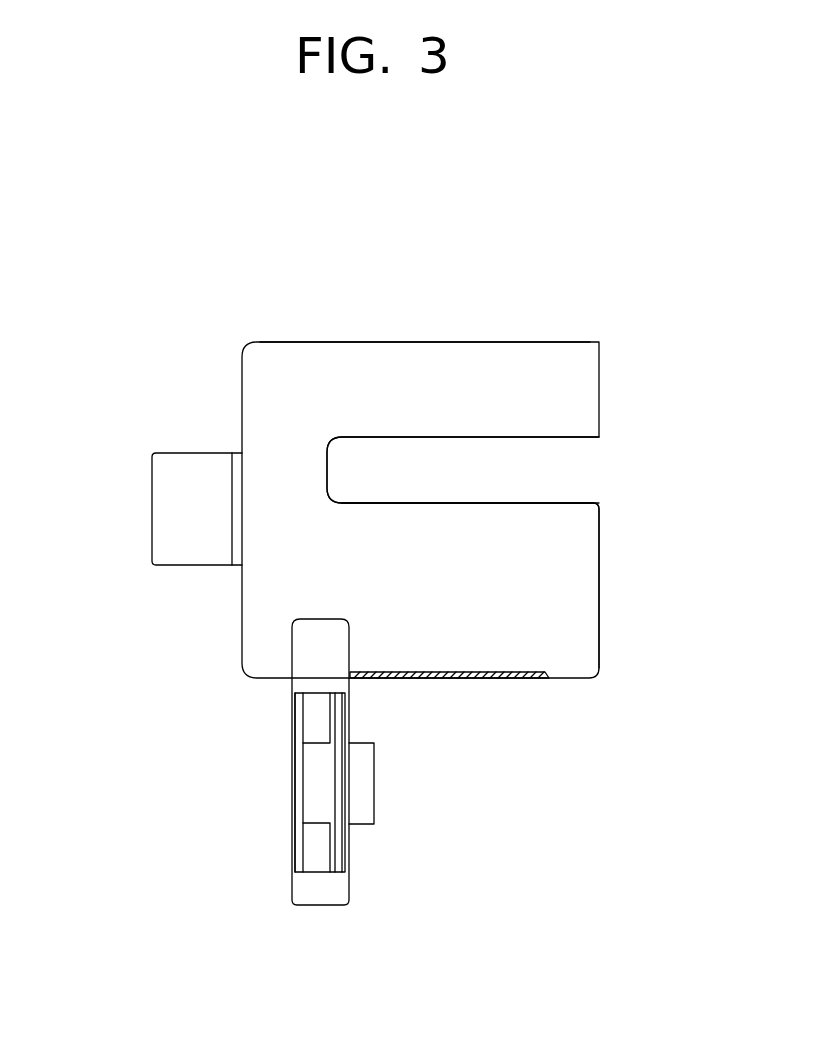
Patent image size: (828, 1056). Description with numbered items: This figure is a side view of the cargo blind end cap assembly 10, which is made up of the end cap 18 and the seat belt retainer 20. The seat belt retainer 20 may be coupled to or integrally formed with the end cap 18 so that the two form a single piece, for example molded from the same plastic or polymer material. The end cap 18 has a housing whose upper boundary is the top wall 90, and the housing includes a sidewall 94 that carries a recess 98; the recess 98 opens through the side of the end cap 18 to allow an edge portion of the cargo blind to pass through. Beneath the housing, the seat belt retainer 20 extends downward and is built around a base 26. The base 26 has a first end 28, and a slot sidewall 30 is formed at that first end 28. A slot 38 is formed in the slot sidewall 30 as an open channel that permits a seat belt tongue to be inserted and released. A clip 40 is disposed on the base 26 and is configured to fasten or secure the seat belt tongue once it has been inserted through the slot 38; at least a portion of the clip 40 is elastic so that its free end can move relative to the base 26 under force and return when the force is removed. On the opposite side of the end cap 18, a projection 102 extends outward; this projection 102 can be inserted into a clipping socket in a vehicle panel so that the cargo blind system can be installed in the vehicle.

The cargo blind end cap assembly 10 is at (653, 206).
The end cap 18 is at (461, 471).
The seat belt retainer 20 is at (320, 783).
The base 26 is at (292, 782).
The first end 28 is at (292, 716).
The slot sidewall 30 is at (318, 895).
The slot 38 is at (322, 850).
The clip 40 is at (375, 780).
The top wall 90 is at (419, 342).
The sidewall 94 is at (585, 588).
The recess 98 is at (562, 470).
The projection 102 is at (152, 487).